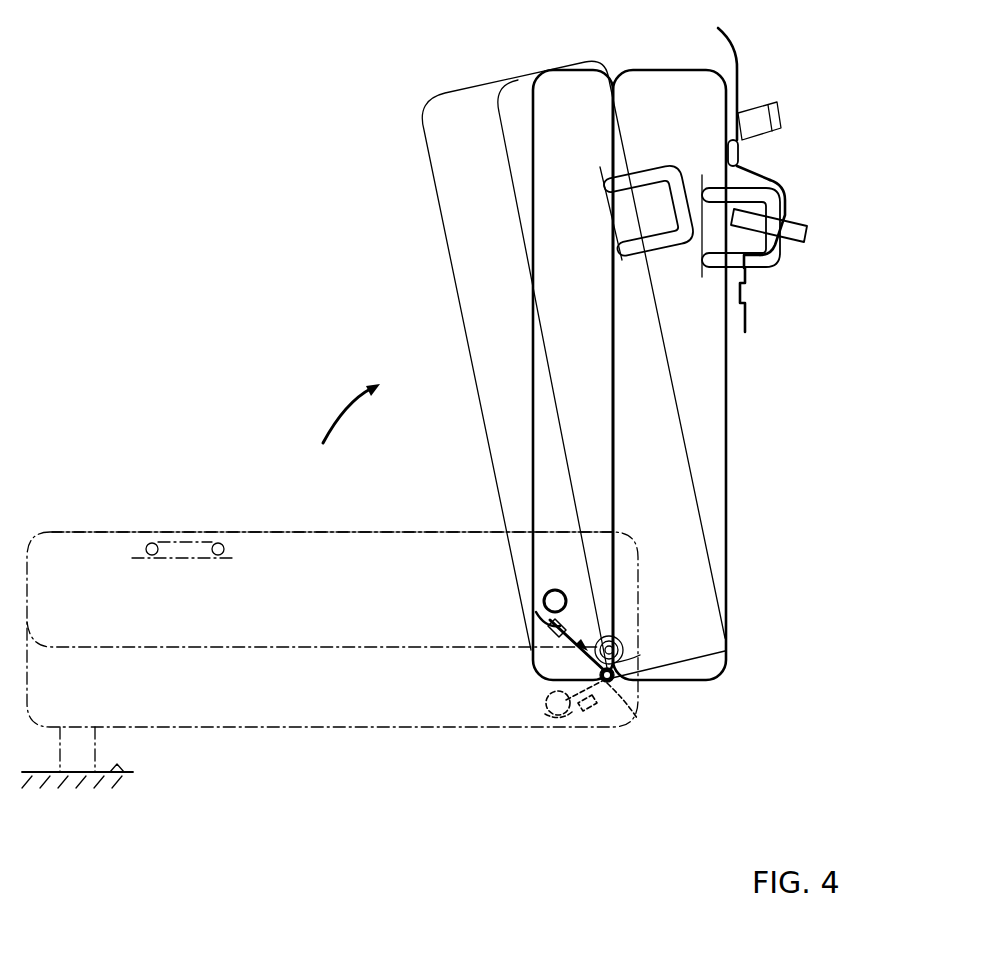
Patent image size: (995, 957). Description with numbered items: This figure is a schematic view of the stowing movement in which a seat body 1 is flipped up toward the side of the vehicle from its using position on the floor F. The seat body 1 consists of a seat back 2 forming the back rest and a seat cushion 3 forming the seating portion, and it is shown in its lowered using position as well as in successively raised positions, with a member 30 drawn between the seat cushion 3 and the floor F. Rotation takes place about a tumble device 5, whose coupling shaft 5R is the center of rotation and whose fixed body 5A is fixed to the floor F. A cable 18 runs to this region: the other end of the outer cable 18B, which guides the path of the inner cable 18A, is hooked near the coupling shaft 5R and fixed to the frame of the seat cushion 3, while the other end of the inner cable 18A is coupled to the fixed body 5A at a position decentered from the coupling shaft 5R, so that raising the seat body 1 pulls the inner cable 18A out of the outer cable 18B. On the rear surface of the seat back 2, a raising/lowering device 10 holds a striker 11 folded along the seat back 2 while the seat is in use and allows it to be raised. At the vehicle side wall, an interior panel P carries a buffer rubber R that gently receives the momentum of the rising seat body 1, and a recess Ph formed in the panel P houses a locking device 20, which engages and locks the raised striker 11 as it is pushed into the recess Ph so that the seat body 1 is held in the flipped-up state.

The seat body 1 is at (513, 92).
The seat back 2 is at (331, 545).
The seat cushion 3 is at (331, 668).
The tumble device 5 is at (697, 635).
The coupling shaft 5R is at (616, 640).
The fixed body 5A is at (623, 651).
The raising/lowering device 10 is at (487, 336).
The striker 11 is at (653, 174).
The lever arm 18 is at (538, 633).
The inner cable 18A is at (600, 657).
The outer cable 18B is at (537, 617).
The locking device 20 is at (786, 226).
The leg 30 is at (92, 748).
The interior panel P is at (723, 53).
The recess Ph is at (762, 187).
The buffer rubber R is at (740, 152).
The floor F is at (119, 775).